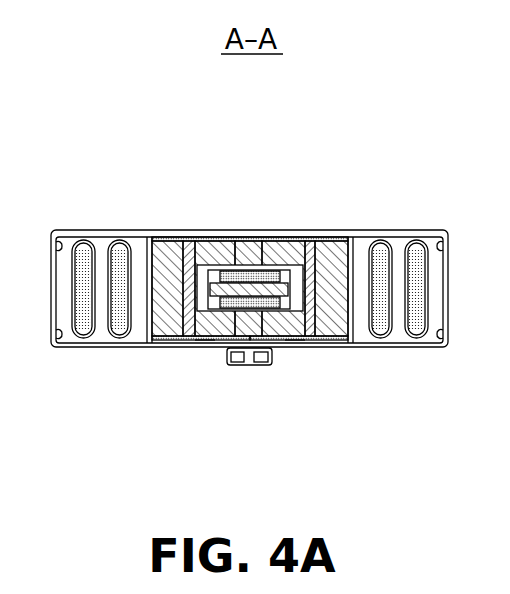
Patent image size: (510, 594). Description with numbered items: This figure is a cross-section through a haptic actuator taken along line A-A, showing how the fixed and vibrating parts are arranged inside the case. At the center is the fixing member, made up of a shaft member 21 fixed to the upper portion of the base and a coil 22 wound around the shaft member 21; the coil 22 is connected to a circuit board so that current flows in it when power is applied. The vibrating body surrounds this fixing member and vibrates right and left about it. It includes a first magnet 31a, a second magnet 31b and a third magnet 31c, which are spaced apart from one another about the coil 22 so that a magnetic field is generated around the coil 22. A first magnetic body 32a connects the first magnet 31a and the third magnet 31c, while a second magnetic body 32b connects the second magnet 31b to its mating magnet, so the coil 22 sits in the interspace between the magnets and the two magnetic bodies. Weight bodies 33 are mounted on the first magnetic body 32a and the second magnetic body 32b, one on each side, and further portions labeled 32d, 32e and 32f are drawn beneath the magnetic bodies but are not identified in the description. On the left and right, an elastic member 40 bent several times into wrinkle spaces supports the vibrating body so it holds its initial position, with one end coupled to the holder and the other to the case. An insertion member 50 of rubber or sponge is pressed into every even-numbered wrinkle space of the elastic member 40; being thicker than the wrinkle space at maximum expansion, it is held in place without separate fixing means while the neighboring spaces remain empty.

The shaft member 21 is at (187, 340).
The coil 22 is at (332, 340).
The first magnet 31a is at (223, 239).
The second magnet 31b is at (288, 239).
The third magnet 31c is at (255, 239).
The first magnetic body 32a is at (193, 239).
The second magnetic body 32b is at (316, 239).
The first bobbin flange 32d is at (205, 344).
The second bobbin flange 32e is at (292, 344).
The bobbin protrusion 32f is at (247, 366).
The weight body 33 is at (166, 240).
The elastic member 40 is at (83, 340).
The insertion member 50 is at (122, 250).